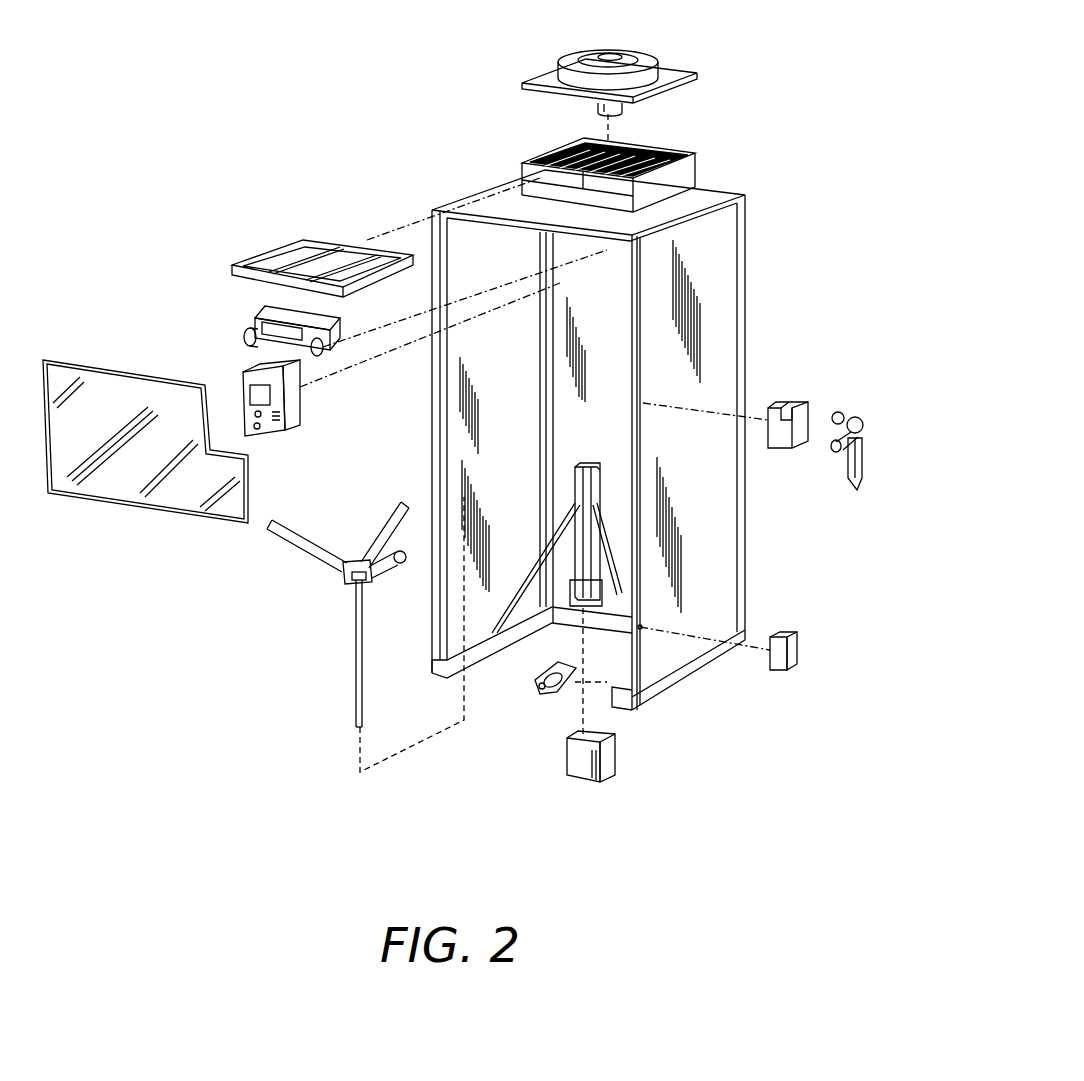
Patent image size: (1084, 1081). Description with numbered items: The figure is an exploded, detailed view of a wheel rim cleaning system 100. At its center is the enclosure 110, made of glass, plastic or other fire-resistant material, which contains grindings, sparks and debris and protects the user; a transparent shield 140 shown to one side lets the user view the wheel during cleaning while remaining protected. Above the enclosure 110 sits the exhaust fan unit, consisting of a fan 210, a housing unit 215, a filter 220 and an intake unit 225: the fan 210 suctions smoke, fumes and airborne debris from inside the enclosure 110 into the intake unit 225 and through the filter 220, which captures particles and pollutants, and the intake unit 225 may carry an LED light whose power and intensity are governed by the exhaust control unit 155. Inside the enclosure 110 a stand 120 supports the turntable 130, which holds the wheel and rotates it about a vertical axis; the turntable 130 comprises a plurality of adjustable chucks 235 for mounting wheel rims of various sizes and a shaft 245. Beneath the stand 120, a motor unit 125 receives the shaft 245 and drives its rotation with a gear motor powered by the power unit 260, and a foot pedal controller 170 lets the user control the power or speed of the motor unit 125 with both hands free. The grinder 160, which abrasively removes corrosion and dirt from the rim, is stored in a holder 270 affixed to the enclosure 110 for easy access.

The wheel rim cleaning system 100 is at (238, 71).
The enclosure 110 is at (748, 265).
The stand 120 is at (578, 483).
The motor unit 125 is at (578, 770).
The turntable 130 is at (355, 602).
The shield 140 is at (115, 485).
The exhaust control unit 155 is at (292, 420).
The grinder 160 is at (855, 448).
The foot pedal controller 170 is at (545, 690).
The fan 210 is at (665, 72).
The housing unit 215 is at (682, 173).
The filter 220 is at (274, 255).
The intake unit 225 is at (257, 322).
The chucks 235 is at (308, 548).
The shaft 245 is at (355, 673).
The power unit 260 is at (782, 655).
The holder 270 is at (788, 400).